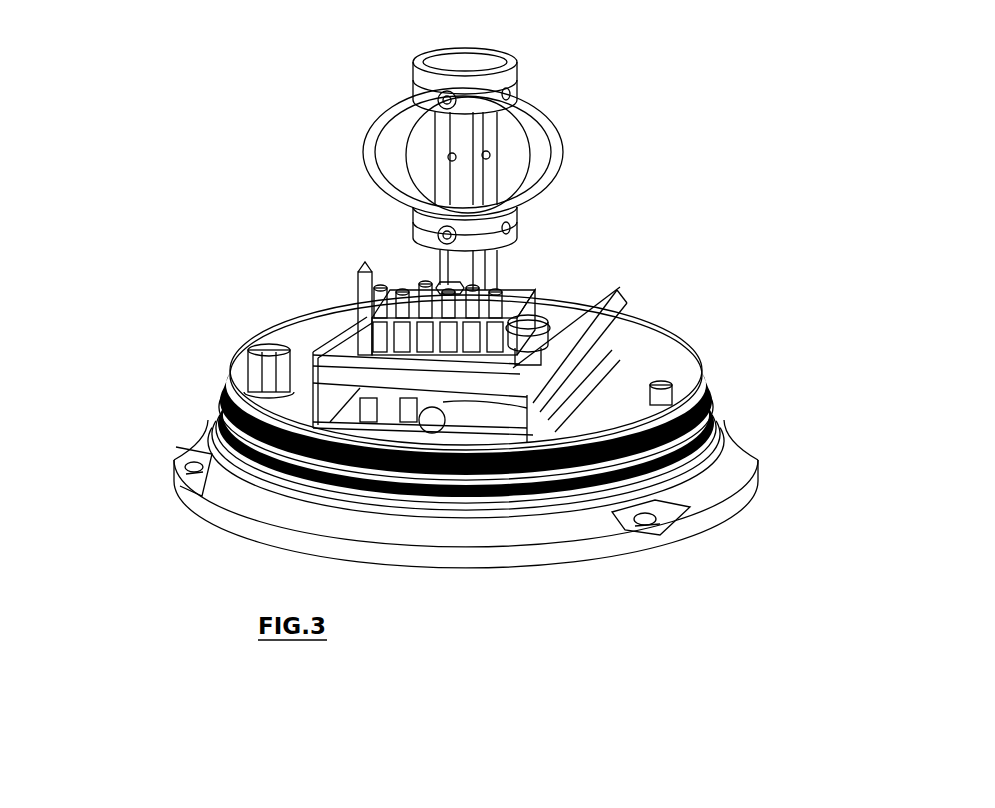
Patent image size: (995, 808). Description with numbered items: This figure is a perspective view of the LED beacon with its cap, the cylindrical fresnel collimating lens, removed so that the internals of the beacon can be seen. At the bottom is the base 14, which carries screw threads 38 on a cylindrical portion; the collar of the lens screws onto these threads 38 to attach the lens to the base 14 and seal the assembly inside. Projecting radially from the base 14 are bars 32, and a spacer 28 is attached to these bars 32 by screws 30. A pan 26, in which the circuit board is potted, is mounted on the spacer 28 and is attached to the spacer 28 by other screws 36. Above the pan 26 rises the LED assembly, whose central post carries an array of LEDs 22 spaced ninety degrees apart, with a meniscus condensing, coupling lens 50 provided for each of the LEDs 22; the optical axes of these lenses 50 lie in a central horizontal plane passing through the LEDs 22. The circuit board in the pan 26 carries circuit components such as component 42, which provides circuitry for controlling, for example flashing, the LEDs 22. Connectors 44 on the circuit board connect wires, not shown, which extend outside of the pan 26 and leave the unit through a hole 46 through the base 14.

The base 14 is at (722, 468).
The LEDs 22 is at (450, 157).
The pan 26 is at (606, 313).
The spacer 28 is at (590, 380).
The screws 30 is at (265, 389).
The bars 32 is at (260, 348).
The screws 36 is at (405, 272).
The screw threads 38 is at (712, 412).
The component 42 is at (523, 318).
The connectors 44 is at (362, 285).
The hole 46 is at (545, 470).
The meniscus condensing, coupling lenses 50 is at (372, 119).